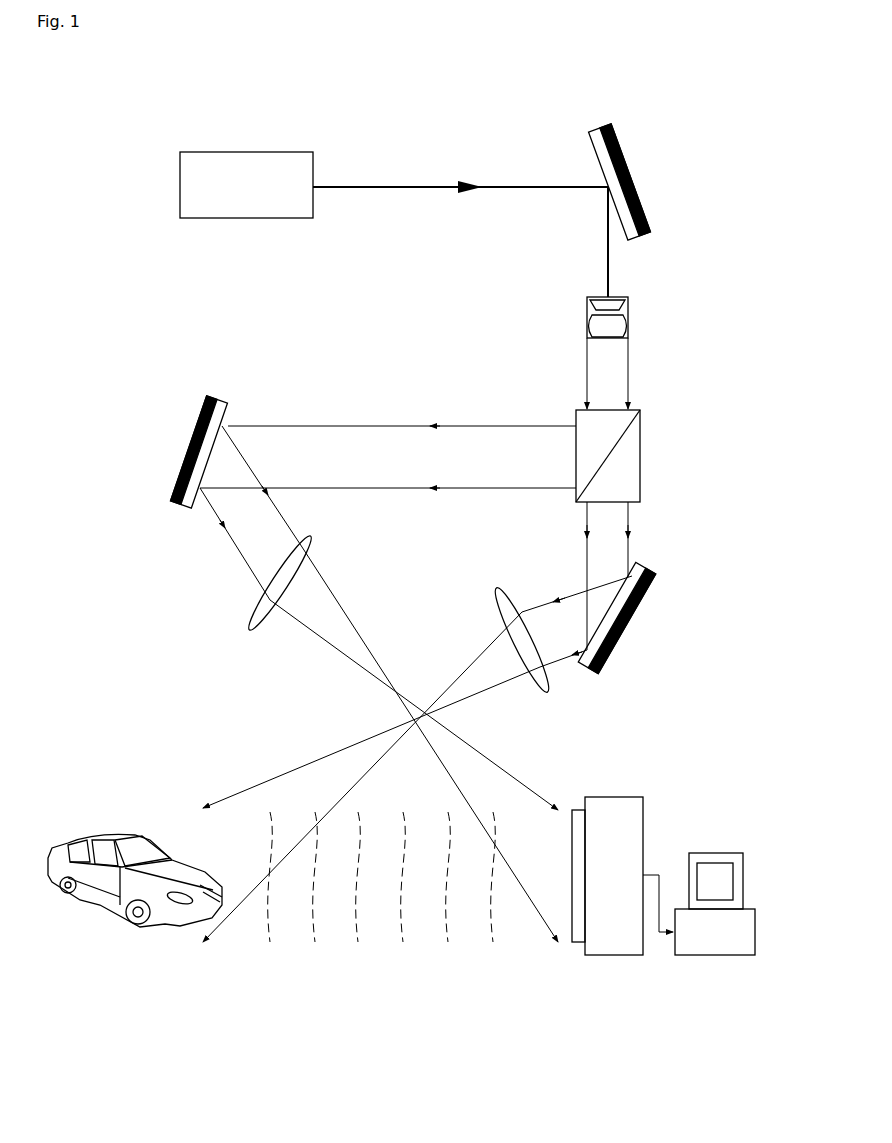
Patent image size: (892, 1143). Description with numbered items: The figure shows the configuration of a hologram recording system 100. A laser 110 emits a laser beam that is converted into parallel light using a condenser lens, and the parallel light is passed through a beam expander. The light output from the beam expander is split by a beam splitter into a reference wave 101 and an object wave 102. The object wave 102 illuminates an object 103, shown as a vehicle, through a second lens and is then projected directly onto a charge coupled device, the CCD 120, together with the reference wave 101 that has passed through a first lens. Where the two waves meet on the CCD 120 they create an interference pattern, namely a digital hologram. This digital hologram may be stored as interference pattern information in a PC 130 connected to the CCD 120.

The hologram recording system 100 is at (465, 88).
The laser 110 is at (248, 152).
The reference wave 101 is at (358, 488).
The object wave 102 is at (590, 553).
The object 103 is at (113, 838).
The CCD camera 120 is at (615, 797).
The PC 130 is at (715, 853).